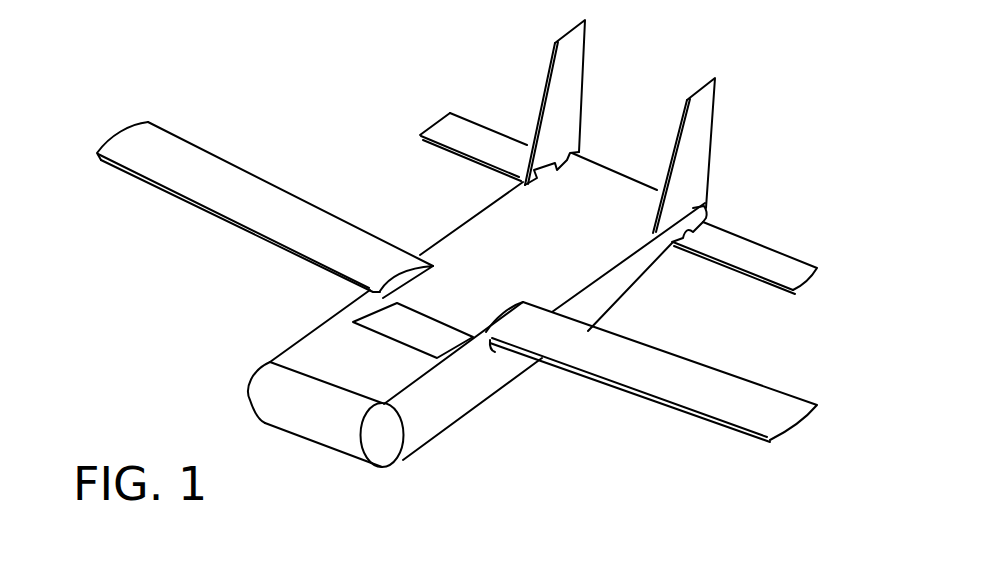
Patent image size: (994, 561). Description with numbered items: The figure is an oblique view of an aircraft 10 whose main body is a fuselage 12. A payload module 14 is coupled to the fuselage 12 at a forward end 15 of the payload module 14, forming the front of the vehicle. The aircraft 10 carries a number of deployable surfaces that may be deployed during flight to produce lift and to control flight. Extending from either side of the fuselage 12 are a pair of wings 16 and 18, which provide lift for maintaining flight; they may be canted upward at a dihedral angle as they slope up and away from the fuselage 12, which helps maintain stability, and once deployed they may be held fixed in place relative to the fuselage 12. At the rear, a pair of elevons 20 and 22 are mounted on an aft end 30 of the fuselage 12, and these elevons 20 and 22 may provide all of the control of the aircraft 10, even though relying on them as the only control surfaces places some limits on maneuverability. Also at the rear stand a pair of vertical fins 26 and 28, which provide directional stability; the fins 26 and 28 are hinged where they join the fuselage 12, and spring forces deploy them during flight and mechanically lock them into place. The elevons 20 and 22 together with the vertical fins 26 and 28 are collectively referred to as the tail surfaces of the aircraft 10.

The aircraft 10 is at (126, 102).
The fuselage 12 is at (465, 245).
The payload module 14 is at (337, 443).
The forward end 15 is at (513, 391).
The wing 16 is at (110, 162).
The wing 18 is at (757, 413).
The elevon 20 is at (450, 125).
The elevon 22 is at (778, 267).
The vertical fin 26 is at (579, 45).
The vertical fin 28 is at (707, 112).
The aft end 30 is at (720, 212).